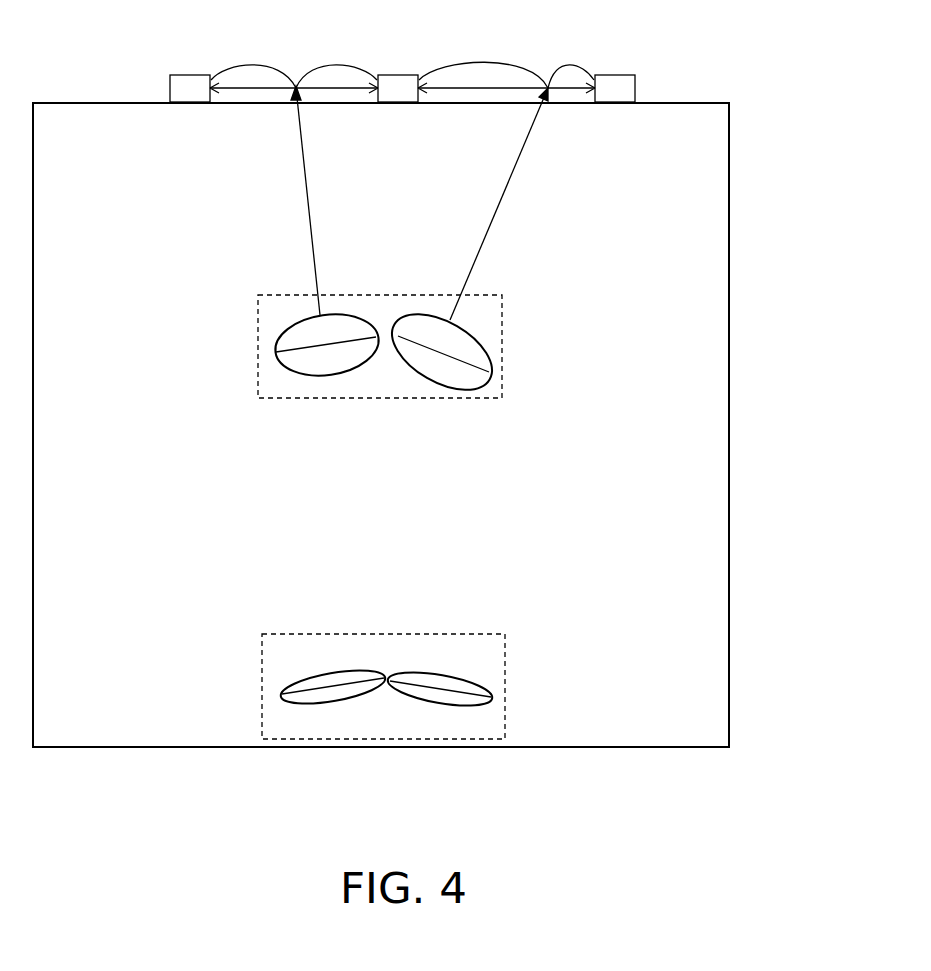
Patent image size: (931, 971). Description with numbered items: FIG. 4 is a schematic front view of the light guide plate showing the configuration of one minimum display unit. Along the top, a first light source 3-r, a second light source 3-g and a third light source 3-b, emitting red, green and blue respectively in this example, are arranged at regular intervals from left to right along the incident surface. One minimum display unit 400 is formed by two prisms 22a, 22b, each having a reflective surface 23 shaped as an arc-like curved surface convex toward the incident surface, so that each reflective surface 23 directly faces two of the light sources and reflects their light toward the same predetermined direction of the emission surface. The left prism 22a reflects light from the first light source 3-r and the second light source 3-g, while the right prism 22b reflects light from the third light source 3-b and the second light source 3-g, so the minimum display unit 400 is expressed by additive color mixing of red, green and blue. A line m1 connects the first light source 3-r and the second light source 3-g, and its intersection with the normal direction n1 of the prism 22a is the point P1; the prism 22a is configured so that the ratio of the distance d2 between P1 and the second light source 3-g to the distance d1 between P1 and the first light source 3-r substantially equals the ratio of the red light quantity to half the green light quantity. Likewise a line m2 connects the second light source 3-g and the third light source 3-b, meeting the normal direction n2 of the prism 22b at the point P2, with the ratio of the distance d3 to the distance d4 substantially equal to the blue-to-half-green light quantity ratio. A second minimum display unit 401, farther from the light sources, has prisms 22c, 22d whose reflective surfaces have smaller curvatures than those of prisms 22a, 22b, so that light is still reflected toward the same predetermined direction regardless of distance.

The first light source 3-r is at (193, 75).
The second light source 3-g is at (399, 75).
The third light source 3-b is at (616, 75).
The distance between intersection point p1 and first light source d1 is at (253, 61).
The distance between intersection point p1 and second light source d2 is at (336, 61).
The distance between intersection point p2 and second light source d3 is at (483, 61).
The distance between intersection point p2 and third light source d4 is at (571, 61).
The line connecting first light source and second light source m1 is at (250, 90).
The line connecting second light source and third light source m2 is at (483, 90).
The intersection point P1 is at (302, 95).
The intersection point P2 is at (555, 92).
The normal direction of the prism 22a n1 is at (310, 217).
The normal direction of the prism 22b n2 is at (494, 217).
The reflective surface 23 is at (302, 335).
The prism 22a is at (328, 375).
The prism 22b is at (463, 387).
The prism 22c is at (332, 703).
The prism 22d is at (460, 703).
The minimum display unit 400 is at (502, 380).
The minimum display unit 401 is at (505, 657).